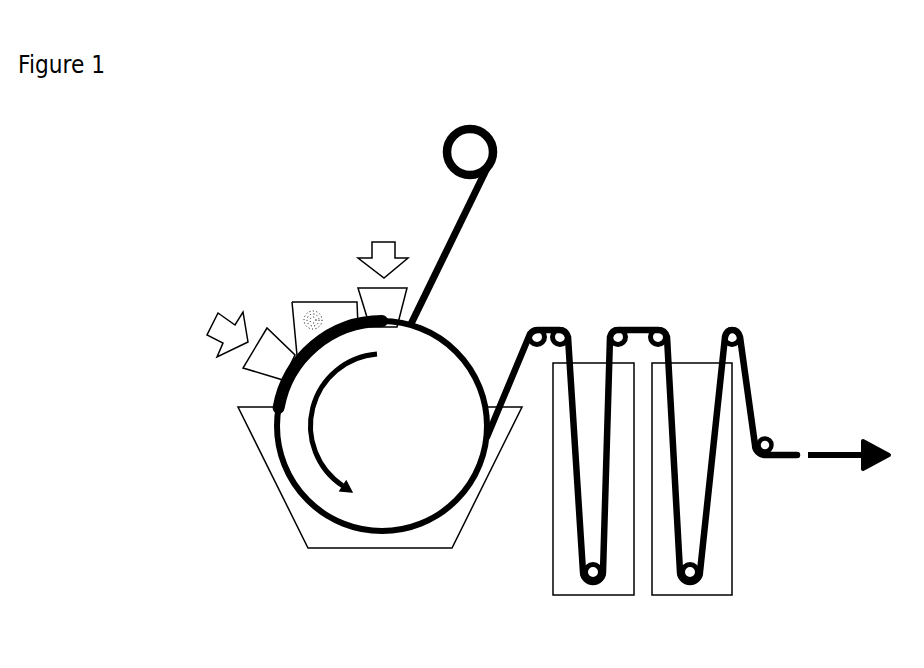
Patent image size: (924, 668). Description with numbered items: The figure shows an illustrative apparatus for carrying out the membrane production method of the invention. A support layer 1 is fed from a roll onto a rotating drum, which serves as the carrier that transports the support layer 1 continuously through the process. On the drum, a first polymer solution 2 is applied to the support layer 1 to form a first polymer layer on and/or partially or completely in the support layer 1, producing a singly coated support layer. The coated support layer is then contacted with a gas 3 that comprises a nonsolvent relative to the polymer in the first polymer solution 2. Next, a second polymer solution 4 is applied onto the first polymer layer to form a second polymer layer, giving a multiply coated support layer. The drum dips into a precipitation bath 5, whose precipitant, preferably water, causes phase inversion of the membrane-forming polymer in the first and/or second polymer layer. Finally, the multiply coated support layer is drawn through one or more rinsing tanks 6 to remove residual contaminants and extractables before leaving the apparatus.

The support layer 1 is at (482, 197).
The first polymer solution 2 is at (383, 264).
The nonsolvent-containing gas 3 is at (300, 321).
The second polymer solution 4 is at (216, 330).
The precipitation bath 5 is at (380, 501).
The rinsing tank 6 is at (688, 493).